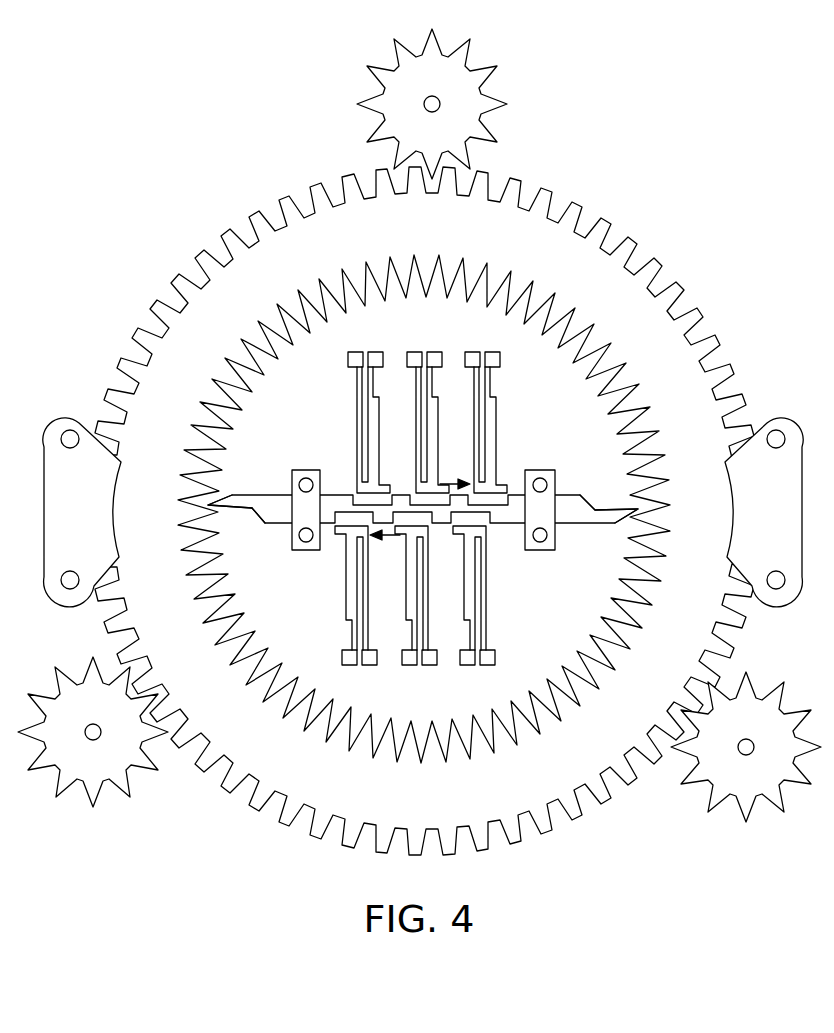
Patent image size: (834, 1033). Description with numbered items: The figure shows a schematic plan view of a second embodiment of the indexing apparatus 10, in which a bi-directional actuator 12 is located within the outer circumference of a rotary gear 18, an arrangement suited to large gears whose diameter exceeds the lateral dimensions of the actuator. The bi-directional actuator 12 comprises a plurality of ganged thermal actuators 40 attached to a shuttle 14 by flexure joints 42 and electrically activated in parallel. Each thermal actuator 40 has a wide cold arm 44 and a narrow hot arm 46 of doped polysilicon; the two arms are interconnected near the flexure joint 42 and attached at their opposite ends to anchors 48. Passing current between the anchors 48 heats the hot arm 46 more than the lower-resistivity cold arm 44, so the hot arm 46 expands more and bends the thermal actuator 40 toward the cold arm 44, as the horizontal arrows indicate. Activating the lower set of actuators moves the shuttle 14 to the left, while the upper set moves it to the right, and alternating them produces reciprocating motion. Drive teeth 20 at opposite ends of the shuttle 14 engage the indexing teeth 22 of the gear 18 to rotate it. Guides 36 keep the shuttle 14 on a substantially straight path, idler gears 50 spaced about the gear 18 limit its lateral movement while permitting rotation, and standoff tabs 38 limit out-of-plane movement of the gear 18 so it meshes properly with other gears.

The indexing apparatus 10 is at (628, 820).
The bi-directional actuator 12 is at (396, 502).
The shuttle 14 is at (345, 494).
The gear 18 is at (403, 802).
The drive teeth 20 is at (223, 510).
The indexing teeth 22 is at (186, 512).
The guides 36 is at (291, 473).
The standoff tabs 38 is at (753, 519).
The thermal actuator 40 is at (352, 393).
The flexure joint 42 is at (344, 588).
The cold arm 44 is at (344, 588).
The hot arm 46 is at (363, 610).
The anchors 48 is at (349, 666).
The idler gears 50 is at (418, 142).